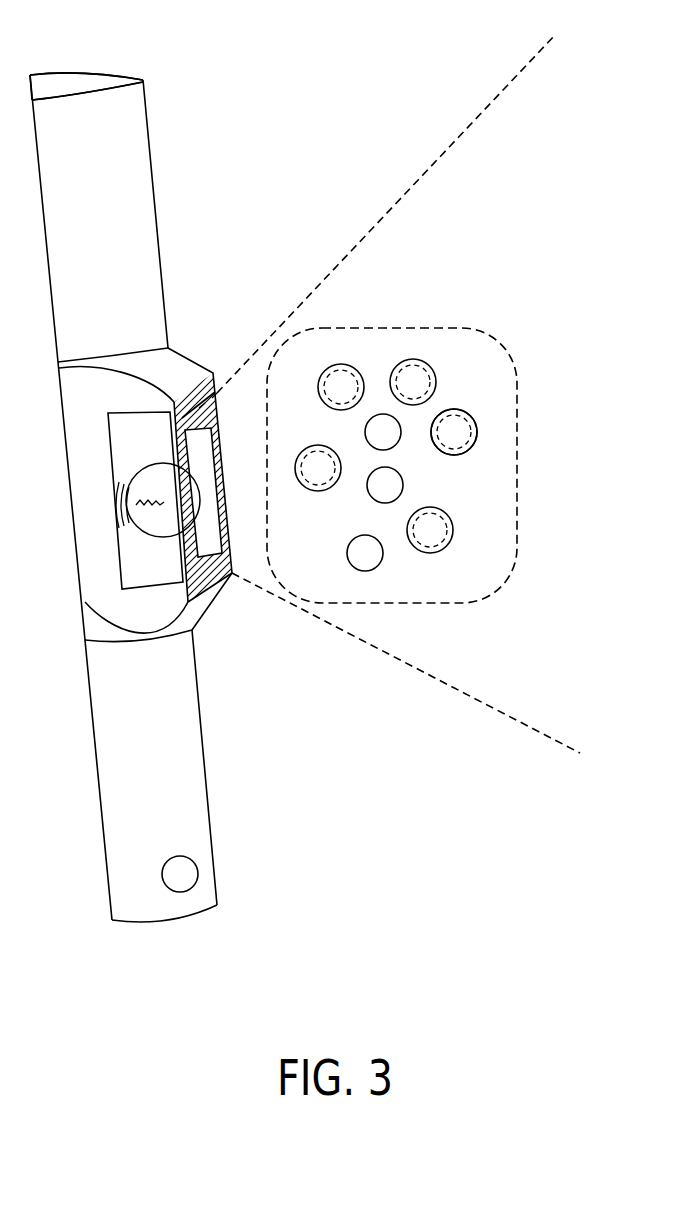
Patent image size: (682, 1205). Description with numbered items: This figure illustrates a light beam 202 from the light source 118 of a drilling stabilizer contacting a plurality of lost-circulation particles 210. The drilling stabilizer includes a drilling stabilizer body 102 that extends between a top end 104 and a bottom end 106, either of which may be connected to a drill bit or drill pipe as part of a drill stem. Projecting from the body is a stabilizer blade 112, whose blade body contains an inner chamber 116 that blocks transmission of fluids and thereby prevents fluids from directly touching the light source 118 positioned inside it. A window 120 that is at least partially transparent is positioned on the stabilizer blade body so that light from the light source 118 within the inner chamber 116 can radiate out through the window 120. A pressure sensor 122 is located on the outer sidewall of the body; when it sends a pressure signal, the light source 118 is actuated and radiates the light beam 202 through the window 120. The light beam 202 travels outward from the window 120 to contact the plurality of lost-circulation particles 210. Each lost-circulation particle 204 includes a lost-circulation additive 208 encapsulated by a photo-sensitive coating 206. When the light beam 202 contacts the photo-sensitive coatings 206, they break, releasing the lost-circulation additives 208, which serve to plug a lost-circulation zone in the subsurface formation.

The drilling stabilizer body 102 is at (148, 128).
The top end 104 is at (130, 922).
The bottom end 106 is at (112, 82).
The stabilizer blade 112 is at (168, 360).
The inner chamber 116 is at (117, 578).
The light source 118 is at (142, 476).
The window 120 is at (210, 552).
The pressure sensor 122 is at (180, 892).
The light beam 202 is at (368, 218).
The lost-circulation particle 204 is at (355, 360).
The photo-sensitive coating 206 is at (470, 450).
The lost-circulation additive 208 is at (470, 434).
The plurality of lost-circulation particles 210 is at (518, 363).